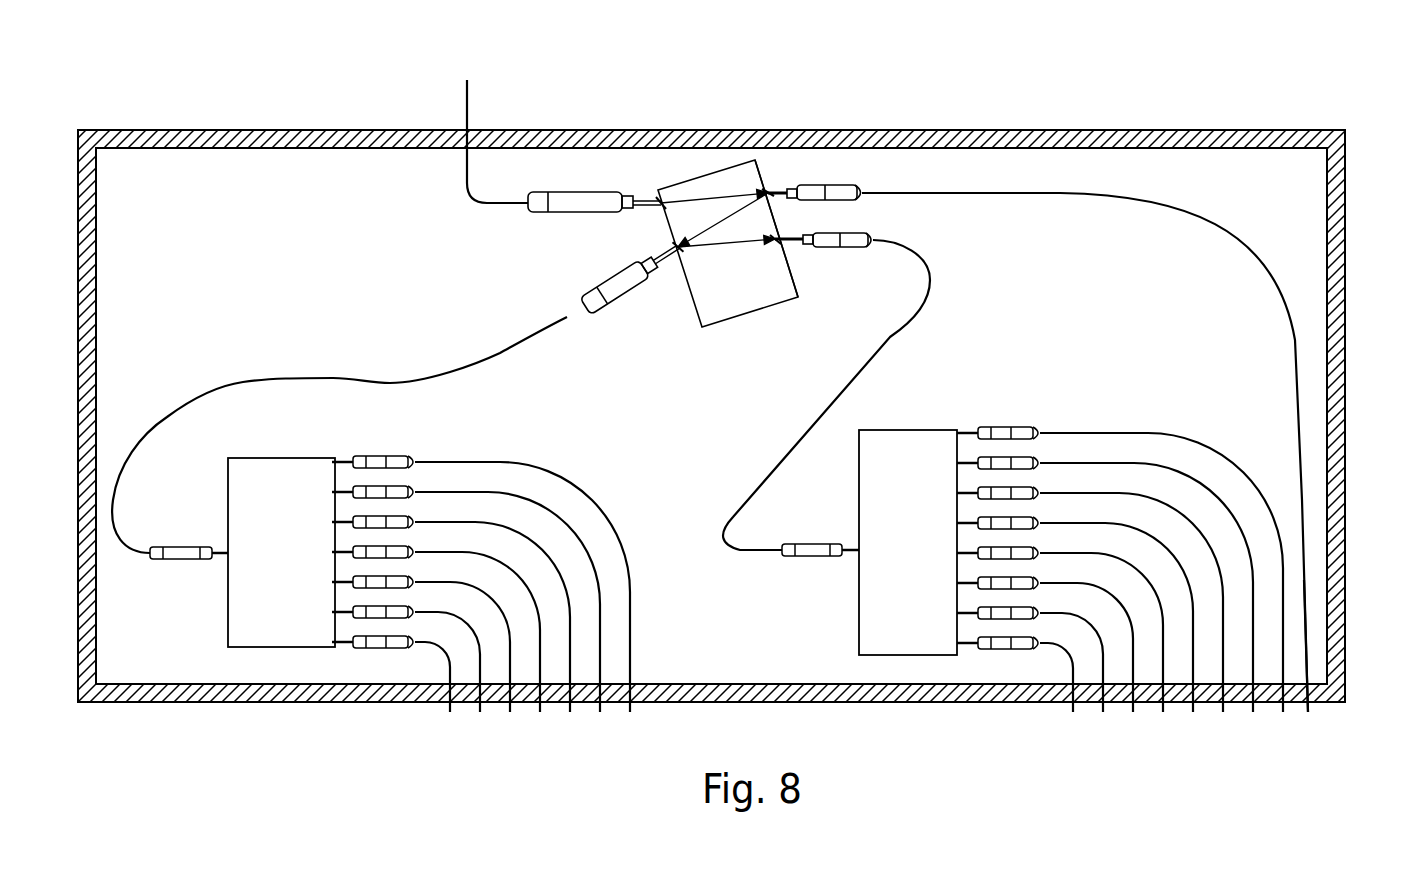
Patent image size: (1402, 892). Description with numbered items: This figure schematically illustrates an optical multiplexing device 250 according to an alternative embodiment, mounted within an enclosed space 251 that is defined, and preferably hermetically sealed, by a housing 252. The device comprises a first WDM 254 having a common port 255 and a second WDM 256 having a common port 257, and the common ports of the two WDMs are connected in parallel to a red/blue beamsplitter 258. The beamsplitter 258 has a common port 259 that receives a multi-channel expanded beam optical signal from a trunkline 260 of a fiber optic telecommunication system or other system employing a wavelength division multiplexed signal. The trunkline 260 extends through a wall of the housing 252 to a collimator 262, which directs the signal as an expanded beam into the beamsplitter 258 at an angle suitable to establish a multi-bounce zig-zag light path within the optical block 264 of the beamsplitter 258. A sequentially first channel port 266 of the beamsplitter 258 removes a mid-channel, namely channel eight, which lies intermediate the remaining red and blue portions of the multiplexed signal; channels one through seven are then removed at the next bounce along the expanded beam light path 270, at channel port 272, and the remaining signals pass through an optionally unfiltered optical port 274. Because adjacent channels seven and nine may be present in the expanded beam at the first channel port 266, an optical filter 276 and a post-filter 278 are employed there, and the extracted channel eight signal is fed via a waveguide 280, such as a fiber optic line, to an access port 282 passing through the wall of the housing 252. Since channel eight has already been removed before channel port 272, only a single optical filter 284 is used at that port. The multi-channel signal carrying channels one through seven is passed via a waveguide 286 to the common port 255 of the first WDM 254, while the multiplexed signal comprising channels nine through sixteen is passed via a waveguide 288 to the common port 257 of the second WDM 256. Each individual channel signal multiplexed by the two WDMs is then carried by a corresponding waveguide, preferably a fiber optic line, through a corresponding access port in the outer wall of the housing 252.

The optical multiplexing device 250 is at (948, 107).
The enclosed space 251 is at (1113, 300).
The housing 252 is at (1007, 129).
The first WDM 254 is at (260, 450).
The common port 255 is at (225, 547).
The second WDM 256 is at (908, 420).
The common port 257 is at (857, 545).
The red/blue beamsplitter 258 is at (708, 156).
The common port 259 is at (658, 205).
The trunkline 260 is at (467, 103).
The collimator 262 is at (560, 212).
The optical block 264 is at (795, 293).
The first channel port 266 is at (764, 188).
The expanded beam light path 270 is at (703, 192).
The channel port 272 is at (685, 250).
The optical port 274 is at (780, 243).
The optical filter 276 is at (771, 186).
The post-filter 278 is at (783, 187).
The waveguide 280 is at (1185, 207).
The access port 282 is at (1310, 712).
The optical filter 284 is at (677, 253).
The waveguide 286 is at (387, 383).
The waveguide 288 is at (890, 337).